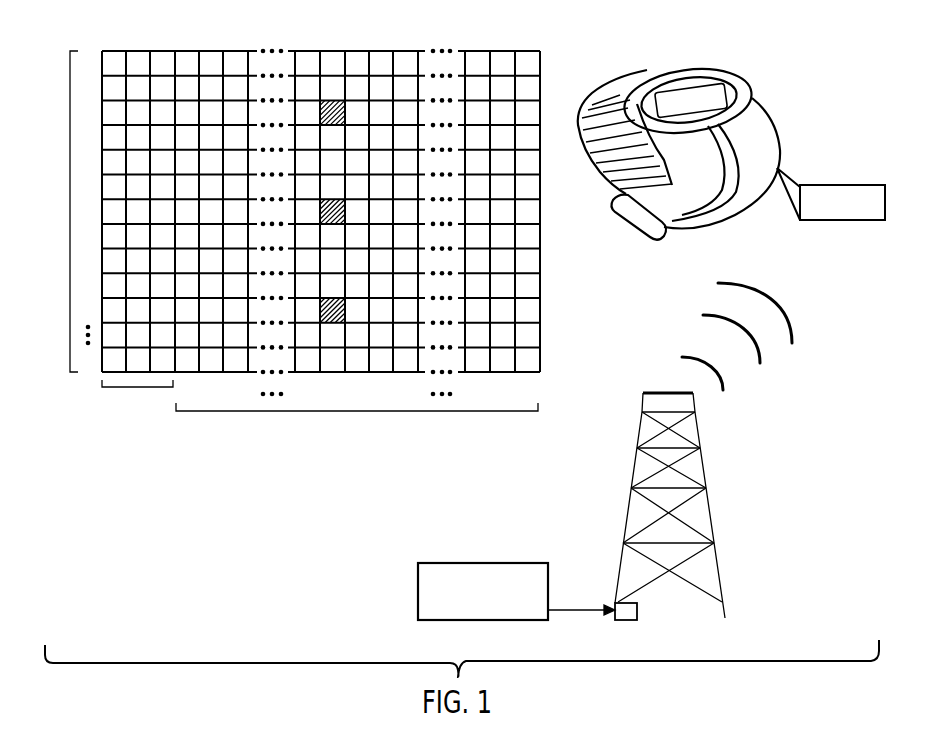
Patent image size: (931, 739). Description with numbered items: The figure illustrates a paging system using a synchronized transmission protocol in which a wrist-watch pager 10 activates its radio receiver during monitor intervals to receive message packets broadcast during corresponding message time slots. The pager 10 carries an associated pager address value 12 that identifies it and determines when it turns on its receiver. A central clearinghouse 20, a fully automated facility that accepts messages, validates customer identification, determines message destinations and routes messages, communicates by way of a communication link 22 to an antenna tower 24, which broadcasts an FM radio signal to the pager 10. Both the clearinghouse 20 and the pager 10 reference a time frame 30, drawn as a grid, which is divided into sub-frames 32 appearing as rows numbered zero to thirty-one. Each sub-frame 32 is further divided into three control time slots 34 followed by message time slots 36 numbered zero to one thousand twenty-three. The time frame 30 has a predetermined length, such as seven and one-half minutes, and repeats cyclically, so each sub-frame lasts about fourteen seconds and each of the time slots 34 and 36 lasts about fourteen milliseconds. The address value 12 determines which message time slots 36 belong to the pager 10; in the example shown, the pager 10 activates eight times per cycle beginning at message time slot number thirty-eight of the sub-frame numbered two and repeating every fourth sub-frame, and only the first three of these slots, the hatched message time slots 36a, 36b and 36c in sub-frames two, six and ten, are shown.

The wrist-watch pager 10 is at (750, 97).
The pager address value 12 is at (843, 183).
The central clearinghouse 20 is at (478, 562).
The communication link 22 is at (578, 607).
The antenna tower 24 is at (618, 517).
The time frame 30 is at (542, 60).
The sub-frame 32 is at (70, 195).
The control time slots 34 is at (132, 390).
The message time slots 36 is at (327, 414).
The first message time slot 36a is at (328, 103).
The second message time slot 36b is at (342, 213).
The third message time slot 36c is at (340, 320).